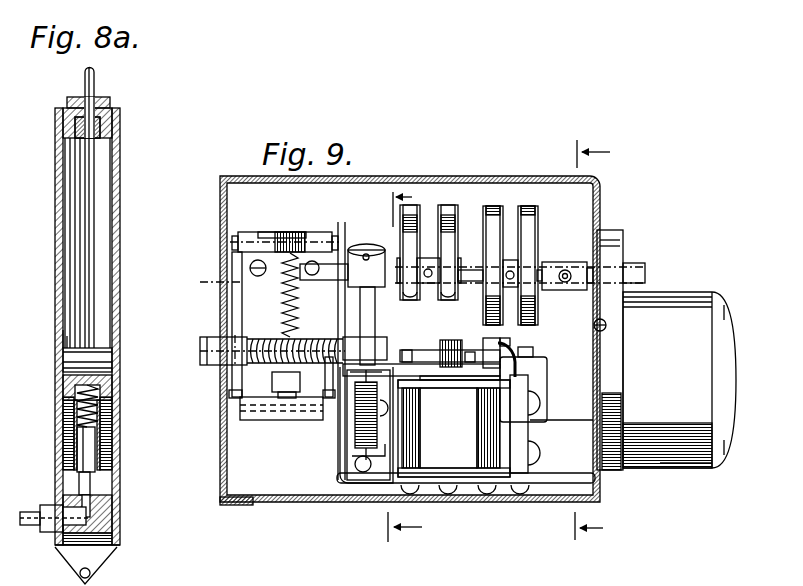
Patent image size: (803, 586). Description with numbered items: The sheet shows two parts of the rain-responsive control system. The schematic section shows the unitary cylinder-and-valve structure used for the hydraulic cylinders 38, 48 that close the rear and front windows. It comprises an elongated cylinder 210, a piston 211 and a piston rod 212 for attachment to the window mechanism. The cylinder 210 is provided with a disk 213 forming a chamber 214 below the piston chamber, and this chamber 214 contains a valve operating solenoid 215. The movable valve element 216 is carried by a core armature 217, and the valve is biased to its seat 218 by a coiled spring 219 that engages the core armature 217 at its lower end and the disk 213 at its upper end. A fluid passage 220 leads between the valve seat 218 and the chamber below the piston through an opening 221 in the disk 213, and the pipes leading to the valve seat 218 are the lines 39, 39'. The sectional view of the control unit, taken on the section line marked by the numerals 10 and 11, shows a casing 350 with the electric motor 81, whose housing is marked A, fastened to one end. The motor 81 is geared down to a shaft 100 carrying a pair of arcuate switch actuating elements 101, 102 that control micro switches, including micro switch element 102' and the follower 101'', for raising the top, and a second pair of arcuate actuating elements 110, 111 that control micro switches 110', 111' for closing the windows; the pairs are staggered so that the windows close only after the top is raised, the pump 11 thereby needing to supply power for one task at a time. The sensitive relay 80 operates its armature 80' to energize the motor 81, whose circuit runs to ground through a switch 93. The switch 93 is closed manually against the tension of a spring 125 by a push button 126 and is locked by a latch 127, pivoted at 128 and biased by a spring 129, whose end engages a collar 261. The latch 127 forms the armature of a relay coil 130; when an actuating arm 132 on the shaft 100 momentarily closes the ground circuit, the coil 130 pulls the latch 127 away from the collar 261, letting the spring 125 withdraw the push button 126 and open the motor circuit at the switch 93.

In FIG. 8A, the hydraulic cylinder 38 is at (55, 203).
In FIG. 8A, the hydraulic cylinder 48 is at (87, 340).
In FIG. 8A, the piston rod 212 is at (88, 174).
In FIG. 8A, the elongated cylinder 210 is at (118, 216).
In FIG. 8A, the piston 211 is at (68, 338).
In FIG. 8A, the disk 213 is at (58, 383).
In FIG. 8A, the opening 221 is at (90, 374).
In FIG. 8A, the coiled spring 219 is at (90, 413).
In FIG. 8A, the chamber 214 is at (67, 413).
In FIG. 8A, the valve operating solenoid 215 is at (115, 427).
In FIG. 8A, the fluid passage 220 is at (72, 450).
In FIG. 8A, the core armature 217 is at (90, 455).
In FIG. 8A, the movable valve element 216 is at (87, 487).
In FIG. 8A, the valve seat 218 is at (83, 517).
In FIG. 8A, the line 39 is at (33, 534).
In FIG. 8A, the line 39' is at (41, 518).
In FIG. 9, the casing 350 is at (478, 503).
In FIG. 9, the shaft 100 is at (543, 261).
In FIG. 9, the arcuate actuating element 110 is at (420, 230).
In FIG. 9, the arcuate actuating element 111 is at (444, 223).
In FIG. 9, the arcuate switch actuating element 101 is at (500, 244).
In FIG. 9, the arcuate switch actuating element 102 is at (538, 237).
In FIG. 9, the electric motor 81 is at (670, 293).
In FIG. 9, the motor housing A is at (678, 463).
In FIG. 9, the section line 10- 10 is at (613, 341).
In FIG. 9, the pump 11 is at (392, 363).
In FIG. 9, the sensitive relay 80 is at (251, 326).
In FIG. 9, the armature 80' is at (282, 217).
In FIG. 9, the spring 125 is at (268, 370).
In FIG. 9, the actuating arm 132 is at (312, 276).
In FIG. 9, the push button 126 is at (198, 344).
In FIG. 9, the pivot 128 is at (365, 348).
In FIG. 9, the latch 127 is at (420, 372).
In FIG. 9, the micro switch 110' is at (414, 334).
In FIG. 9, the micro switch 111' is at (478, 340).
In FIG. 9, the relay coil 130 is at (470, 429).
In FIG. 9, the follower 101'' is at (460, 391).
In FIG. 9, the micro switch element 102' is at (546, 384).
In FIG. 9, the switch 93 is at (500, 334).
In FIG. 9, the collar 261 is at (505, 335).
In FIG. 9, the spring 129 is at (357, 417).